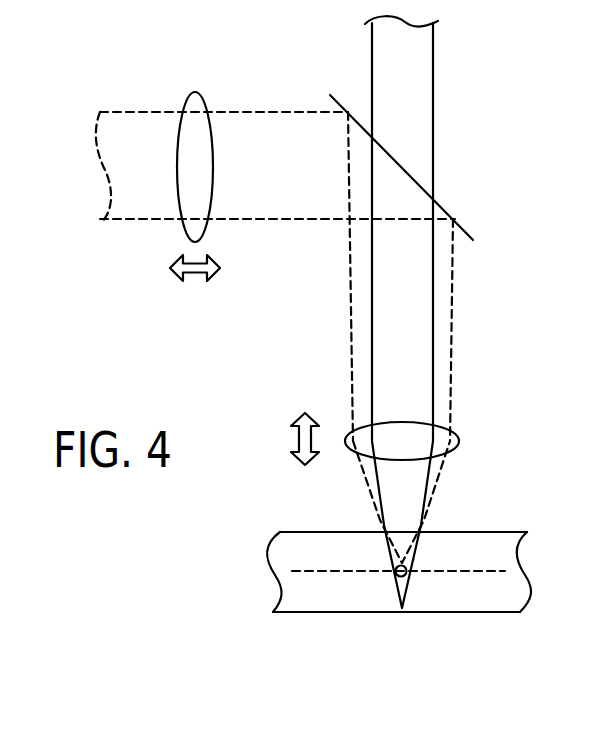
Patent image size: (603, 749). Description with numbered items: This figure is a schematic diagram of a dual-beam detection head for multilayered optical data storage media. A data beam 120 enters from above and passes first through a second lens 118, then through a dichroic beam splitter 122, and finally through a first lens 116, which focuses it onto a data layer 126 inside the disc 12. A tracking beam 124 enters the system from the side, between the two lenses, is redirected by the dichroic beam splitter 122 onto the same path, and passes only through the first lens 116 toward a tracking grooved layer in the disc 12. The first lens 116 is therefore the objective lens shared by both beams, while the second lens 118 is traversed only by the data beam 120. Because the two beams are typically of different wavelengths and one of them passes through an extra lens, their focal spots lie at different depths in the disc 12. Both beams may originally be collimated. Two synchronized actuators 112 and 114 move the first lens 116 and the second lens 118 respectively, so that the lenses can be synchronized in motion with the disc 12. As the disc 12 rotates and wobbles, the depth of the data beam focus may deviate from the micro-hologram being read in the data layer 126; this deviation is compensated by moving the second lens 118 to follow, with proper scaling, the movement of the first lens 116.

The disc 12 is at (458, 612).
The synchronized actuator 112 is at (303, 418).
The synchronized actuator 114 is at (197, 273).
The first lens 116 is at (455, 433).
The second lens 118 is at (196, 95).
The data beam 120 is at (433, 77).
The dichroic beam splitter 122 is at (442, 207).
The tracking beam 124 is at (117, 112).
The data layer 126 is at (478, 571).